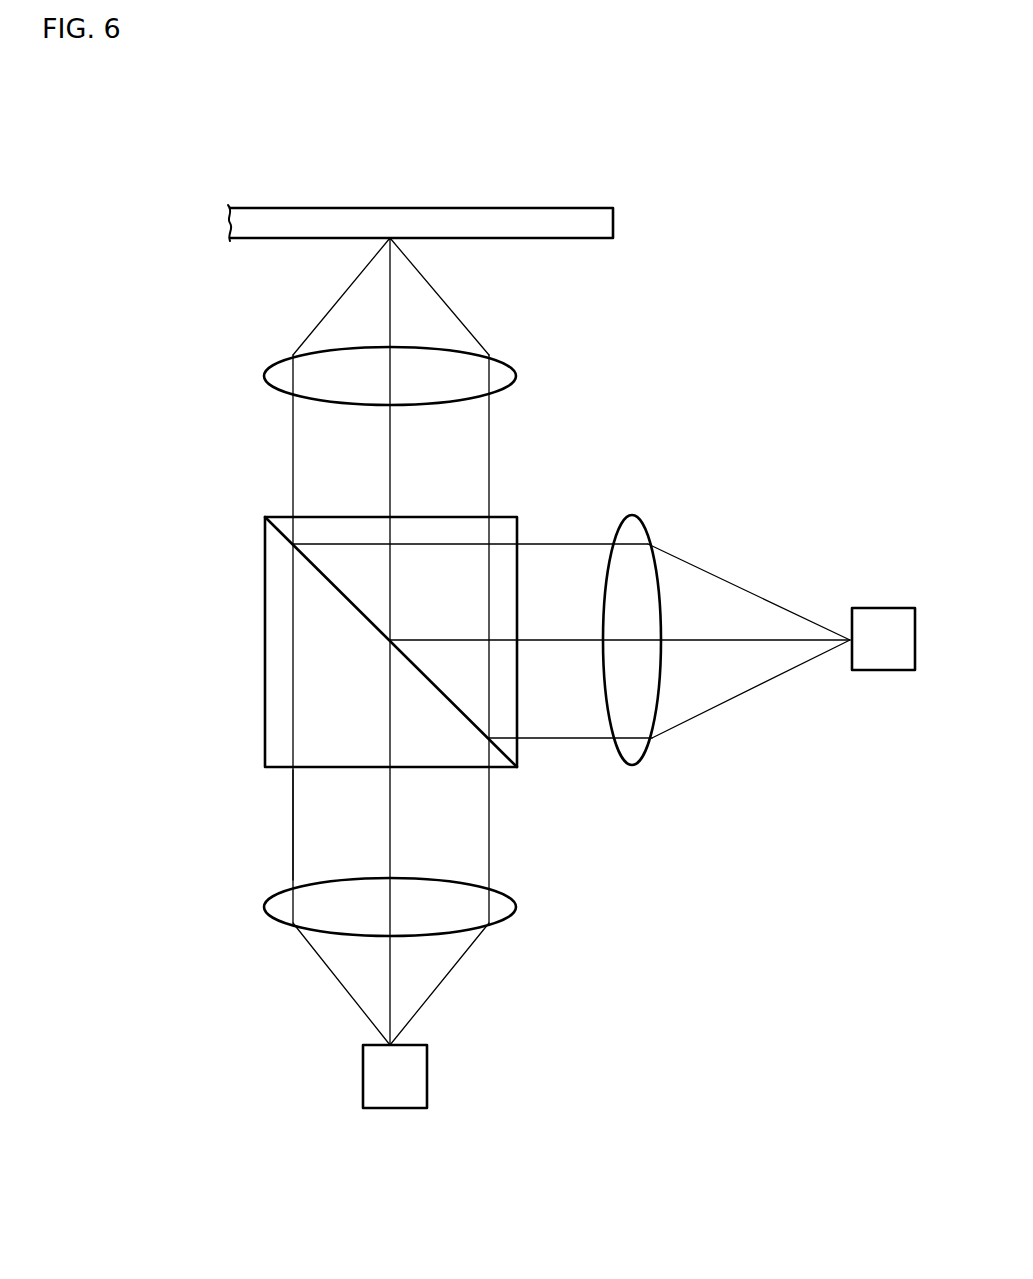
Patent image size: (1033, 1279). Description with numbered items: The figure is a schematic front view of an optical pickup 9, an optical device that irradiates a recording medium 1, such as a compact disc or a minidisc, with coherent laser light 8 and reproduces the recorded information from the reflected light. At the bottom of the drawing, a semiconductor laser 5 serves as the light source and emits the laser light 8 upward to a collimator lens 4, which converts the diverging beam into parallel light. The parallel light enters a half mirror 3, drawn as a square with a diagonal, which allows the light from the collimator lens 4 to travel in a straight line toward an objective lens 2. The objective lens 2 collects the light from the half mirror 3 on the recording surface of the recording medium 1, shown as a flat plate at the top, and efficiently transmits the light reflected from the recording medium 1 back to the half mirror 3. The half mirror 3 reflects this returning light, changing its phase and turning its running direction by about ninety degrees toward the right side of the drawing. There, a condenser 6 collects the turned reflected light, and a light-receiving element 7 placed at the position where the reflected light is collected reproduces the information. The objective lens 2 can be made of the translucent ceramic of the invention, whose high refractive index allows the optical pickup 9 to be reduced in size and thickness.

The recording medium 1 is at (614, 222).
The objective lens 2 is at (512, 378).
The half mirror 3 is at (280, 636).
The collimator lens 4 is at (515, 905).
The semiconductor laser 5 is at (425, 1080).
The condenser 6 is at (630, 522).
The light-receiving element 7 is at (883, 612).
The laser light 8 is at (293, 823).
The optical pickup 9 is at (130, 135).